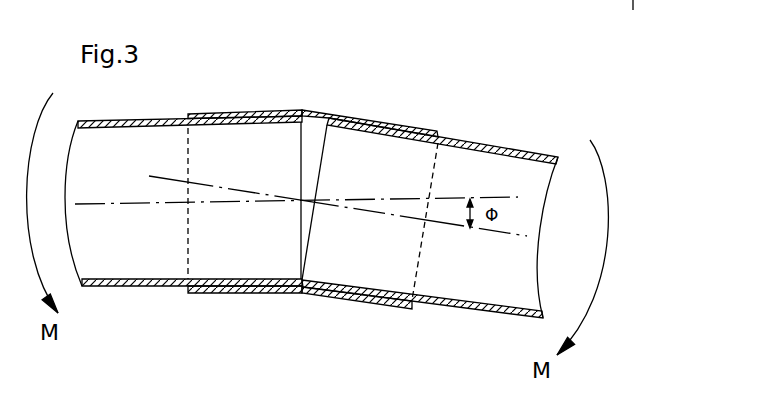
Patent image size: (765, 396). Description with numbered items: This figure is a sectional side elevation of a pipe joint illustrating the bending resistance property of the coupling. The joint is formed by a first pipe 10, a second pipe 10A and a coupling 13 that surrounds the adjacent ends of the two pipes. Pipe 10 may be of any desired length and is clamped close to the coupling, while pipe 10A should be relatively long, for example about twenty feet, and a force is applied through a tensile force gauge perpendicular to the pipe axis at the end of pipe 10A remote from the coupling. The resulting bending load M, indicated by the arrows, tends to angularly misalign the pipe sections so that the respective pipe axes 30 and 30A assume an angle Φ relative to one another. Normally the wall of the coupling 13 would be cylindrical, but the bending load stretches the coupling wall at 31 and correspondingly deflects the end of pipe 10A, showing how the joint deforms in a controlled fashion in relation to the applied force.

The pipe 10 is at (131, 290).
The pipe 10A is at (466, 312).
The coupling 13 is at (255, 109).
The stretched coupling wall region 31 is at (322, 109).
The pipe axis 30 is at (128, 203).
The pipe axis 30A is at (494, 233).